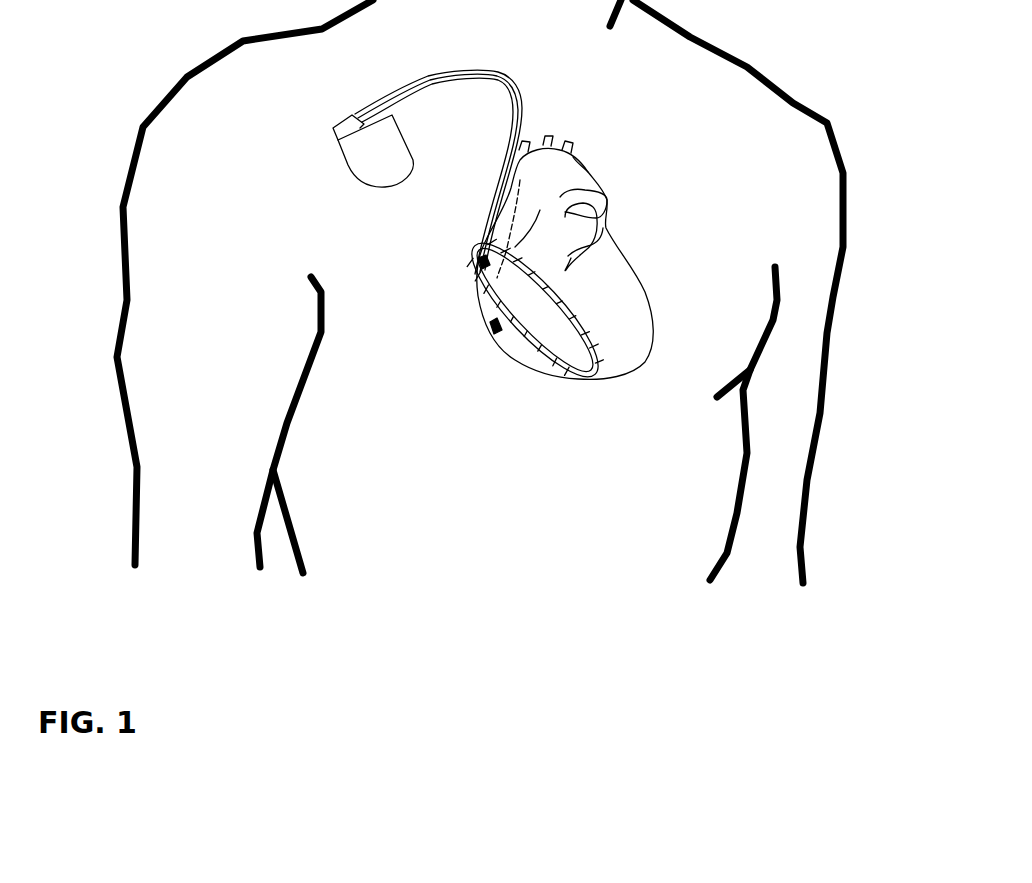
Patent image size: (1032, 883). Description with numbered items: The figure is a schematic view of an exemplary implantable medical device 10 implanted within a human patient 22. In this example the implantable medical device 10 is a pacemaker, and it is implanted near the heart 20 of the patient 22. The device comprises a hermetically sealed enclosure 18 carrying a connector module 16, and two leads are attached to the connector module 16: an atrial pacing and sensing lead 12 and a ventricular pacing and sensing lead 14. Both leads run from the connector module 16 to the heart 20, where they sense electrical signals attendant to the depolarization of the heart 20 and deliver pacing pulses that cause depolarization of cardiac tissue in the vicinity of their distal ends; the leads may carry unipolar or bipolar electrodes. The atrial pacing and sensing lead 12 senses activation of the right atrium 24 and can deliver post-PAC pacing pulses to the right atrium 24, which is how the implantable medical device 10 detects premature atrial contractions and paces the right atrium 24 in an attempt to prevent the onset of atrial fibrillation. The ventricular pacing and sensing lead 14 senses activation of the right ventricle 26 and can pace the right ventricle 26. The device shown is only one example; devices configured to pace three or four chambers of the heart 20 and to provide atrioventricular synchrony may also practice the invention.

The implantable medical device 10 is at (366, 206).
The atrial pacing and sensing lead 12 is at (473, 244).
The ventricular pacing and sensing lead 14 is at (545, 342).
The connector module 16 is at (347, 115).
The hermetically sealed enclosure 18 is at (348, 170).
The heart 20 is at (637, 293).
The patient 22 is at (820, 203).
The right atrium 24 is at (470, 268).
The right ventricle 26 is at (496, 336).